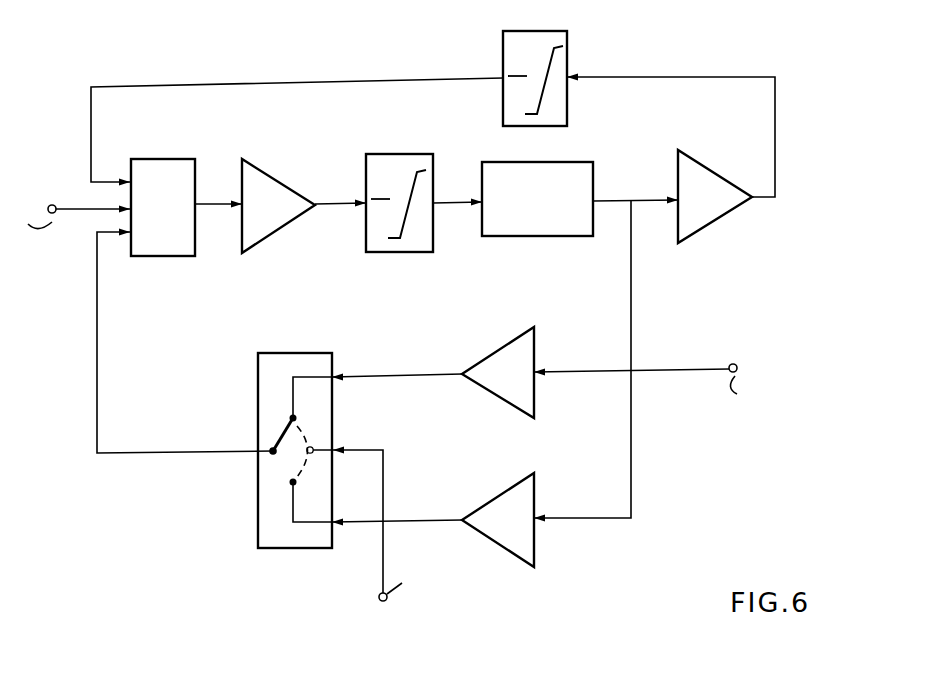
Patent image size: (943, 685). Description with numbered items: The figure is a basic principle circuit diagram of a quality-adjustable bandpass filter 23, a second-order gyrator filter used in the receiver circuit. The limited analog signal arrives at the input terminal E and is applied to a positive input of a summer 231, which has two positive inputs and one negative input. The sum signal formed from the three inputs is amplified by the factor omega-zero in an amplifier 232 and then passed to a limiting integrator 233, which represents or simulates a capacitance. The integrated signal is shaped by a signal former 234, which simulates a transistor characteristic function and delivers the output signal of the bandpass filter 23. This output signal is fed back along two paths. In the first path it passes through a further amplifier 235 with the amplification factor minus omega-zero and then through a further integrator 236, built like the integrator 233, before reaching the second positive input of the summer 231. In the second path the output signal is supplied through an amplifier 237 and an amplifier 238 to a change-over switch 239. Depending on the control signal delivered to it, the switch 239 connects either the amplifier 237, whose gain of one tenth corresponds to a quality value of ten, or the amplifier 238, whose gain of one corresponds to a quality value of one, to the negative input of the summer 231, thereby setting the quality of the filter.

The quality-adjustable bandpass filter 23 is at (128, 535).
The summer 231 is at (158, 258).
The amplifier 232 is at (264, 240).
The limiting integrator 233 is at (396, 254).
The signal former 234 is at (550, 238).
The further amplifier 235 is at (704, 228).
The further integrator 236 is at (570, 44).
The amplifier 237 is at (536, 330).
The amplifier 238 is at (536, 556).
The change-over switch 239 is at (254, 534).